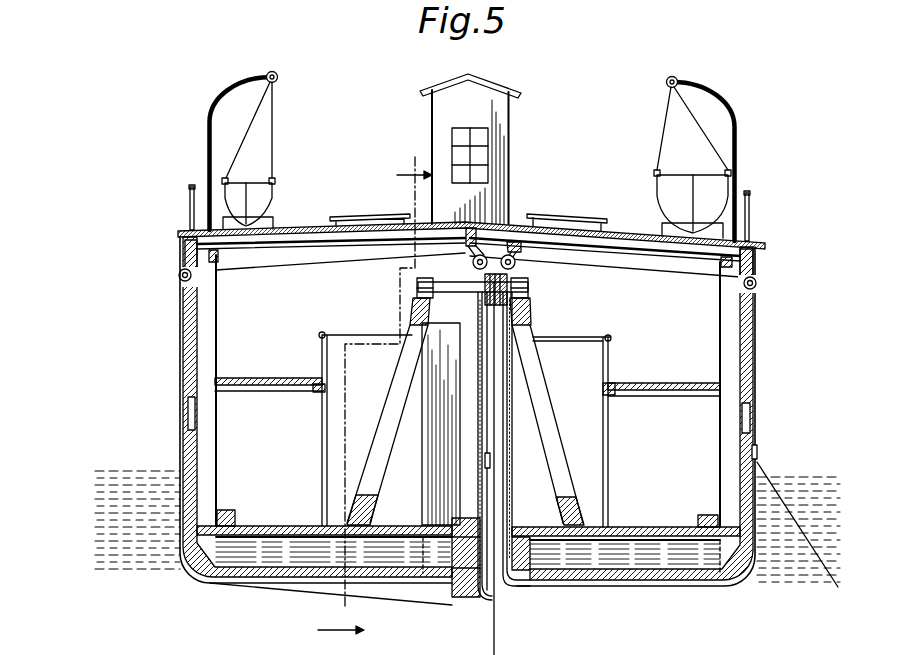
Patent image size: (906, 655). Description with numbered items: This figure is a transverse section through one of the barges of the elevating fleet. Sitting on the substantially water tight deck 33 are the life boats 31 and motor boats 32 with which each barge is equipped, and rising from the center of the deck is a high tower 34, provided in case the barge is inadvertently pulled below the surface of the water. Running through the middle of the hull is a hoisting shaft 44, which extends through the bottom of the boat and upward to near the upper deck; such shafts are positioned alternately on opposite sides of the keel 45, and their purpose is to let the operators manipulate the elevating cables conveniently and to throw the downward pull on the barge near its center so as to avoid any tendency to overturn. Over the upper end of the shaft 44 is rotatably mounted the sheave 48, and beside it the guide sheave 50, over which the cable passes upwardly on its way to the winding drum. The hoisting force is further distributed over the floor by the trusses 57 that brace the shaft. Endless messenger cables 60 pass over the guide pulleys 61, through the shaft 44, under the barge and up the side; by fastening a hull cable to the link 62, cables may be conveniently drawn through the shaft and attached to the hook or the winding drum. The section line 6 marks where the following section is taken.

The section line 6— 6 is at (375, 400).
The life boats 31 is at (263, 193).
The motor boats 32 is at (712, 187).
The deck 33 is at (621, 232).
The tower 34 is at (500, 112).
The hoisting shaft 44 is at (510, 494).
The keel 45 is at (462, 597).
The sheave 48 is at (515, 282).
The guide sheave 50 is at (497, 278).
The trusses 57 is at (397, 378).
The endless messenger cables 60 is at (647, 270).
The guide pulleys 61 is at (509, 245).
The link 62 is at (487, 458).